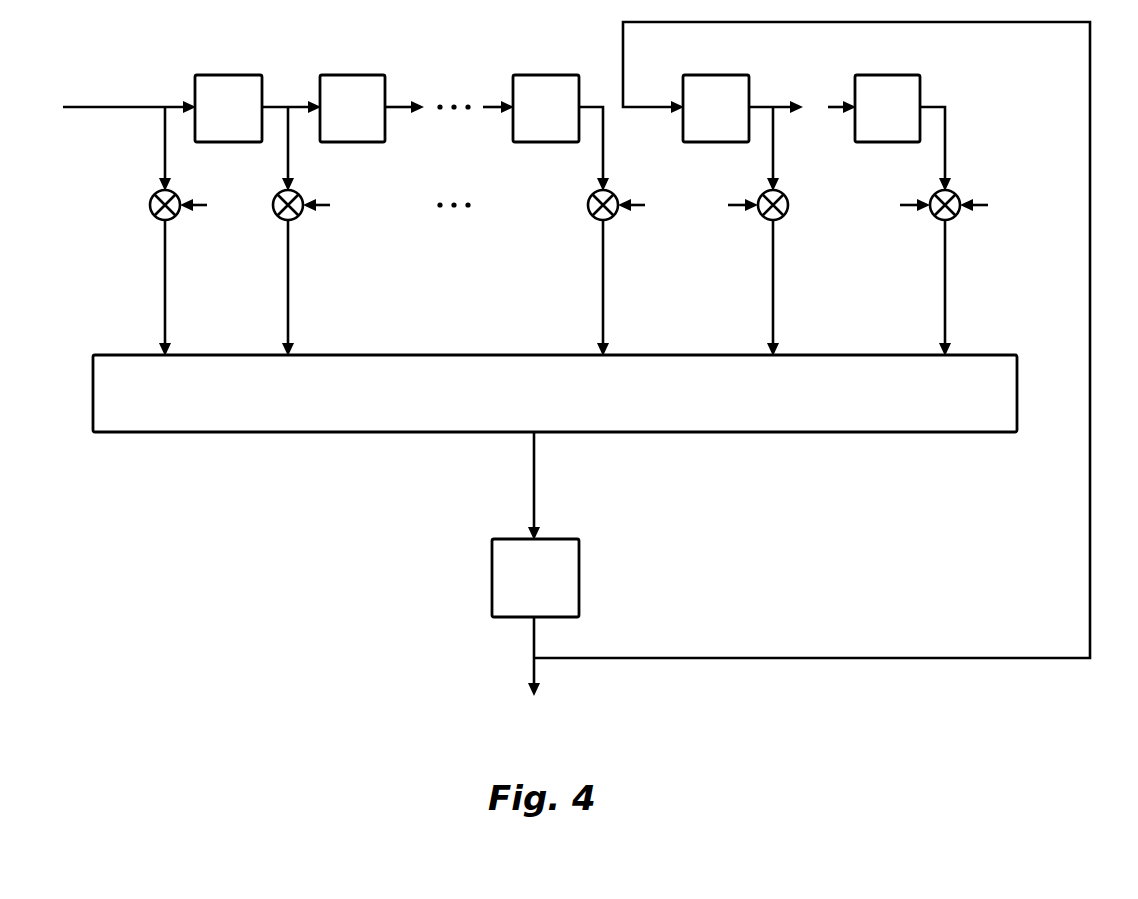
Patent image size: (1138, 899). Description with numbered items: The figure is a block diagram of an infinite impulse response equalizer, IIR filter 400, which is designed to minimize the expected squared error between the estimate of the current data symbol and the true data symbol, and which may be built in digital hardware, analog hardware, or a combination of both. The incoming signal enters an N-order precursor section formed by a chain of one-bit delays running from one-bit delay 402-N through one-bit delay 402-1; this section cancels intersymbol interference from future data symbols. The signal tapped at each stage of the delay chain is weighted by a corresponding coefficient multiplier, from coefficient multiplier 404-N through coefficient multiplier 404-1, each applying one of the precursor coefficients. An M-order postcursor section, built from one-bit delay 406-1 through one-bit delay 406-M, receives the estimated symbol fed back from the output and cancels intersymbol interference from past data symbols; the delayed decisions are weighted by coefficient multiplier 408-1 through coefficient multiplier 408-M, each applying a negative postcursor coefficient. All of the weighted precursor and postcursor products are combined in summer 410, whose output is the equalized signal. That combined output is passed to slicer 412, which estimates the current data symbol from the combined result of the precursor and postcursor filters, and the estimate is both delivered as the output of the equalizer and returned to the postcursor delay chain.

The IIR filter 400 is at (200, 646).
The one-bit delay 402-N is at (231, 75).
The one-bit delay 402-1 is at (547, 75).
The coefficient multiplier 404-N is at (153, 220).
The coefficient multiplier 404-1 is at (593, 220).
The one-bit delay 406-1 is at (718, 75).
The one-bit delay 406-M is at (890, 75).
The coefficient multiplier 408-1 is at (790, 220).
The coefficient multiplier 408-M is at (960, 220).
The summer 410 is at (222, 435).
The slicer 412 is at (492, 583).